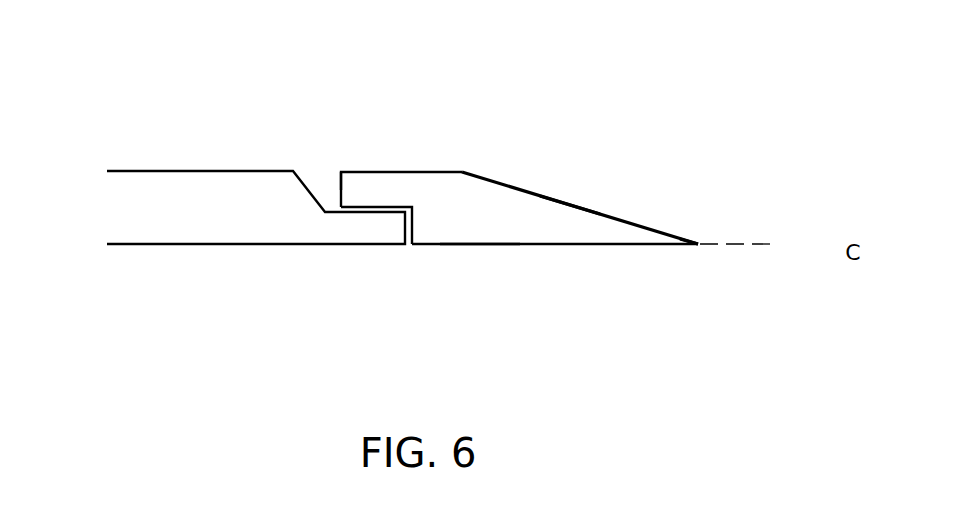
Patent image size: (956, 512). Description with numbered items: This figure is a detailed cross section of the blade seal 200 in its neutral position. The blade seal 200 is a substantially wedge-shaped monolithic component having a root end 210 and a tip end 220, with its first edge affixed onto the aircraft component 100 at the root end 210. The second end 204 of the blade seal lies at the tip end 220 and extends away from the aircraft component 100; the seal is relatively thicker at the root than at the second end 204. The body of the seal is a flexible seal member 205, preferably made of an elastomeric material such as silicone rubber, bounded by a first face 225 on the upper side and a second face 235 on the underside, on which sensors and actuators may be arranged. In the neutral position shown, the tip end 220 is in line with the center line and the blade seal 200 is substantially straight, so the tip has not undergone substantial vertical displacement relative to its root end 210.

The aircraft component 100 is at (135, 225).
The blade seal 200 is at (443, 102).
The second end 204 is at (337, 177).
The flexible seal member 205 is at (483, 217).
The root end 210 is at (380, 183).
The tip end 220 is at (693, 233).
The first face 225 is at (574, 203).
The second face 235 is at (602, 247).